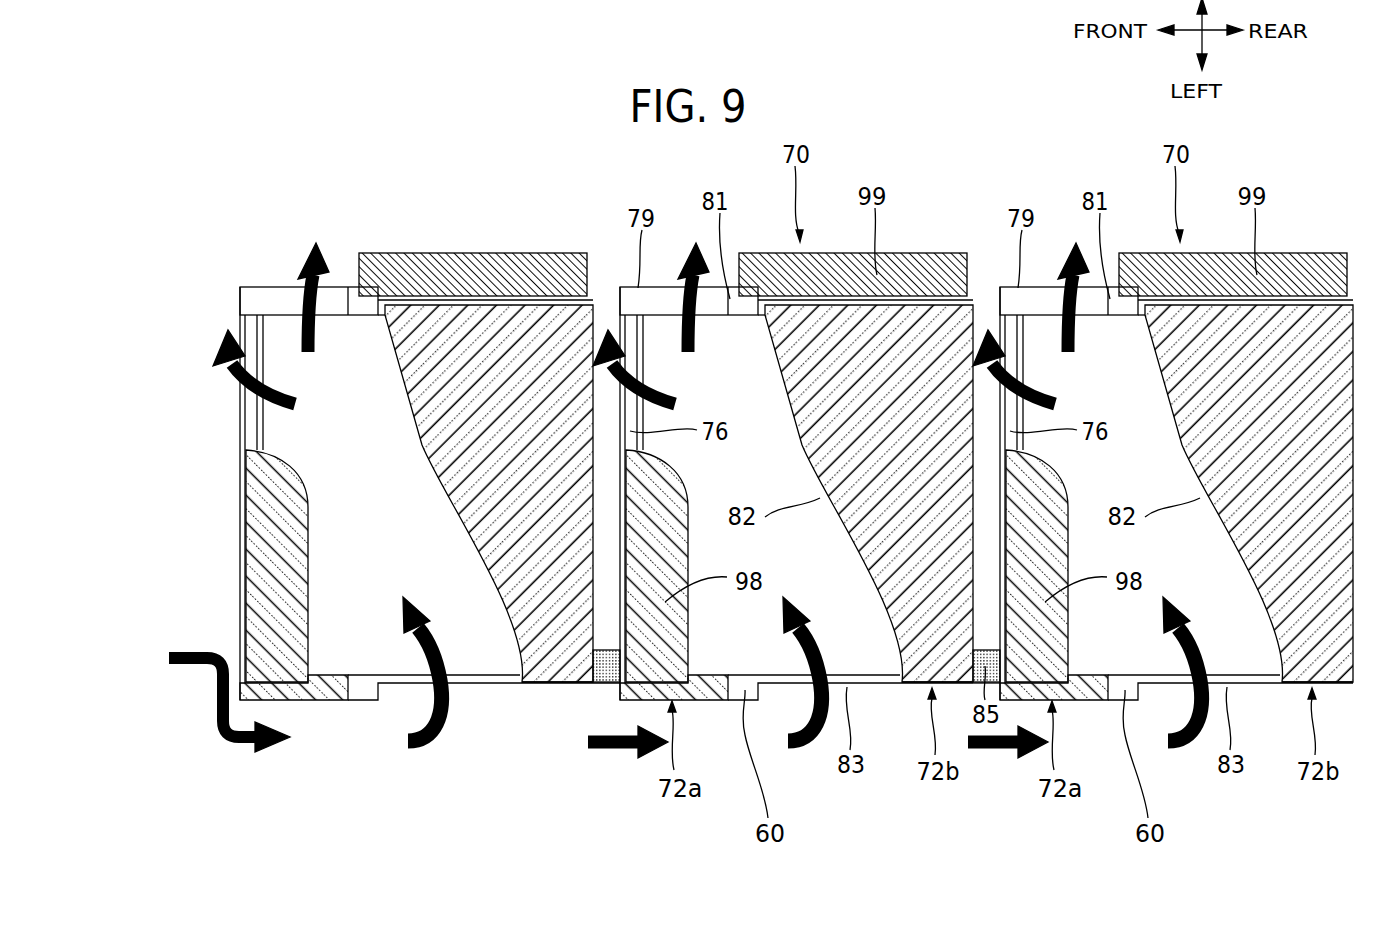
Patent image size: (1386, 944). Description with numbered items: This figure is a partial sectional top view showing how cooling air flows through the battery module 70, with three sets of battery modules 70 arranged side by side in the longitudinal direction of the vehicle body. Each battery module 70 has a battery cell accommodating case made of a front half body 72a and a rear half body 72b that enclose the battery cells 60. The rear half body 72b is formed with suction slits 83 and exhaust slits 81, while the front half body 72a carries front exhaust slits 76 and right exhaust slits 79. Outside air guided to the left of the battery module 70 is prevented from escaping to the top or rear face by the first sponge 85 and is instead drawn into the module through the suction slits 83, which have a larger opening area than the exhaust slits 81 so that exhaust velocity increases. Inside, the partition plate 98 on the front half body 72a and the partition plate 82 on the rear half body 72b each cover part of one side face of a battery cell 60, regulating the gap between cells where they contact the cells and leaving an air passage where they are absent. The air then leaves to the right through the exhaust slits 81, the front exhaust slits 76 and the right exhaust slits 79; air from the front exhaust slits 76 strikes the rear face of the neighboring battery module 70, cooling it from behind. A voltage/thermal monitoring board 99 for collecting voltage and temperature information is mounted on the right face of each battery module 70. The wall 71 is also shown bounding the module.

The battery cell 60 is at (365, 690).
The battery module 70 is at (419, 233).
The side wall 71 is at (243, 543).
The front half body 72a is at (318, 710).
The rear half body 72b is at (552, 698).
The front exhaust slit 76 is at (250, 431).
The right exhaust slit 79 is at (258, 288).
The exhaust slit 81 is at (350, 299).
The partition plate 82 is at (440, 498).
The suction slit 83 is at (467, 687).
The first sponge 85 is at (605, 666).
The partition plate 98 is at (285, 602).
The voltage/thermal monitoring board 99 is at (497, 275).